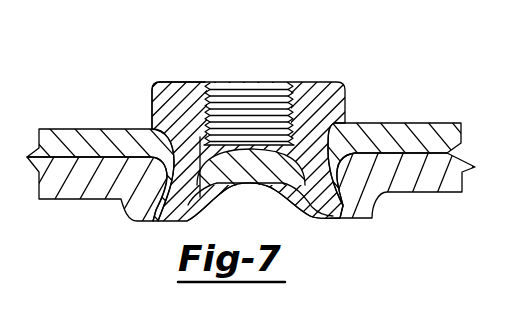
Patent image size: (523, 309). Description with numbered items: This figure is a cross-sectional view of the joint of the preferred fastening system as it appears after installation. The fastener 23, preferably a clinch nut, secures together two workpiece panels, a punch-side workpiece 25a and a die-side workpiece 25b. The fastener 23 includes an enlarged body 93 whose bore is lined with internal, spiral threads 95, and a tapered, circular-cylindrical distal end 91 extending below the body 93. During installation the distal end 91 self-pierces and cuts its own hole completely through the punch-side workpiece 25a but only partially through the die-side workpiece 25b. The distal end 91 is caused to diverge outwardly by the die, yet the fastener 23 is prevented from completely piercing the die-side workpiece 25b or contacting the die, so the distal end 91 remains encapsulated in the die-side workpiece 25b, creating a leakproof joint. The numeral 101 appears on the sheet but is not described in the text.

The fastener 23 is at (343, 90).
The punch-side workpiece 25a is at (88, 137).
The die-side workpiece 25b is at (73, 187).
The distal end 91 is at (162, 205).
The enlarged body 93 is at (158, 105).
The internal spiral threads 95 is at (253, 97).
The fastener assembly 101 is at (505, 292).